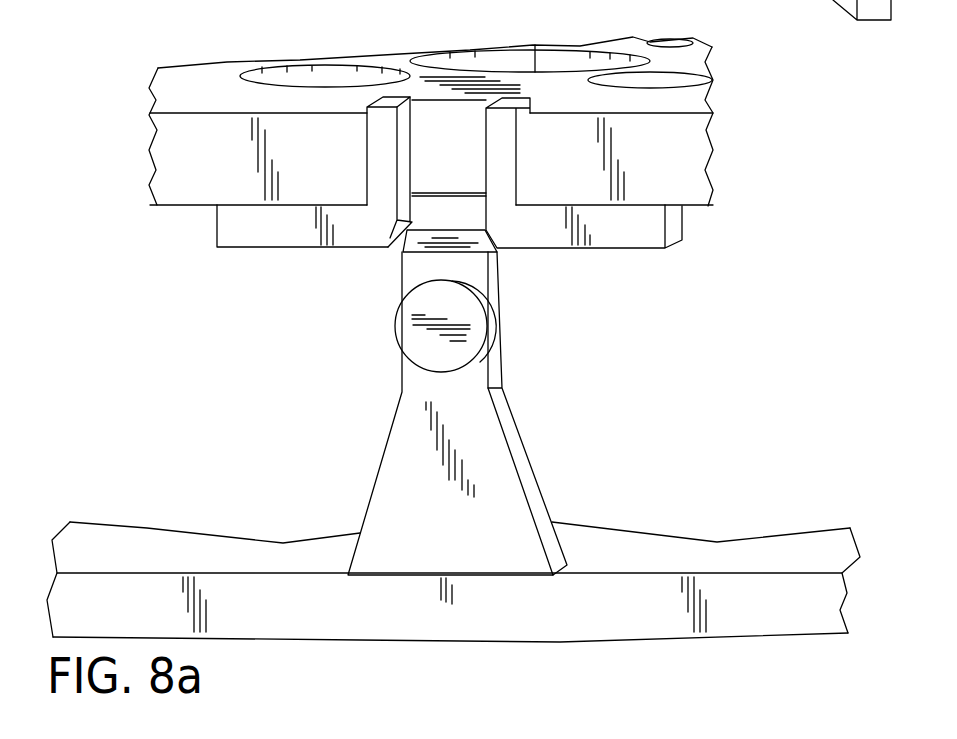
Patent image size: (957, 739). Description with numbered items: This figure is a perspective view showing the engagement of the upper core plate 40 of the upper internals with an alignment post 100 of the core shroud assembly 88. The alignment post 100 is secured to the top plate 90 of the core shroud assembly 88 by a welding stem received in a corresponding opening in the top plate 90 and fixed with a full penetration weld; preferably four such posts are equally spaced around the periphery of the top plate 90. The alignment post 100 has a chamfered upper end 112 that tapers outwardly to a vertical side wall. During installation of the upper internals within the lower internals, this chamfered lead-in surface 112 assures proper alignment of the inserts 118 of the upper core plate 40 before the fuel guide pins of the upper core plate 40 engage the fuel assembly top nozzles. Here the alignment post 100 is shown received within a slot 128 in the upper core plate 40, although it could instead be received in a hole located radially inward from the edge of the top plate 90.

The upper core plate 40 is at (230, 103).
The slot 128 is at (448, 133).
The inserts 118 is at (283, 237).
The chamfered upper end 112 is at (404, 249).
The alignment post 100 is at (474, 543).
The top plate 90 is at (152, 566).
The core shroud assembly 88 is at (636, 522).